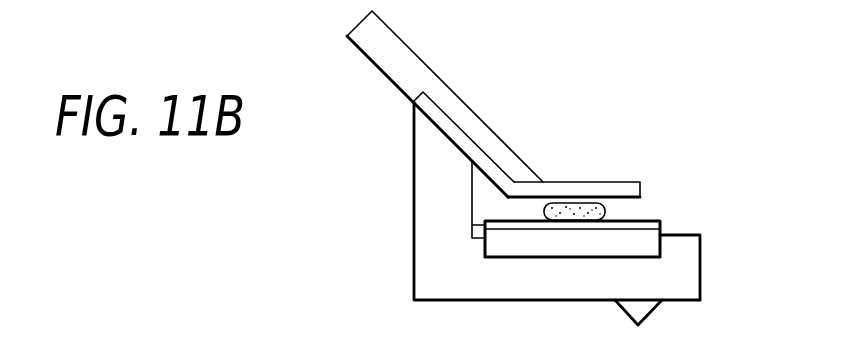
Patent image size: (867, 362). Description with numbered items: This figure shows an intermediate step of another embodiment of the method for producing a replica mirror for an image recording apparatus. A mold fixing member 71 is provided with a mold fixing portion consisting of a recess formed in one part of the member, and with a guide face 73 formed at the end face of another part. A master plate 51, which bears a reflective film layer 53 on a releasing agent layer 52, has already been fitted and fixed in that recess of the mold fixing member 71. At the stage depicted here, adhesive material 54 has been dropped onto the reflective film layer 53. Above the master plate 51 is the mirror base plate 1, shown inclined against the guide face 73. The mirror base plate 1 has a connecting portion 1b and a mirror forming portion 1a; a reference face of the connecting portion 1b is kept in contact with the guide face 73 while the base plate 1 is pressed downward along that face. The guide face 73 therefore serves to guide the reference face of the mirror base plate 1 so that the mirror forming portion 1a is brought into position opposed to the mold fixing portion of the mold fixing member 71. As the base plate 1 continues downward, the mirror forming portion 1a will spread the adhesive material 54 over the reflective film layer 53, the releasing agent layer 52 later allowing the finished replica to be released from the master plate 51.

The mirror base plate 1 is at (525, 106).
The mirror forming portion 1a is at (630, 200).
The connecting portion 1b is at (381, 69).
The guide face 73 is at (449, 117).
The adhesive material 54 is at (645, 219).
The reflective film layer 53 is at (661, 222).
The releasing agent layer 52 is at (472, 230).
The master plate 51 is at (413, 287).
The mold fixing member 71 is at (701, 277).